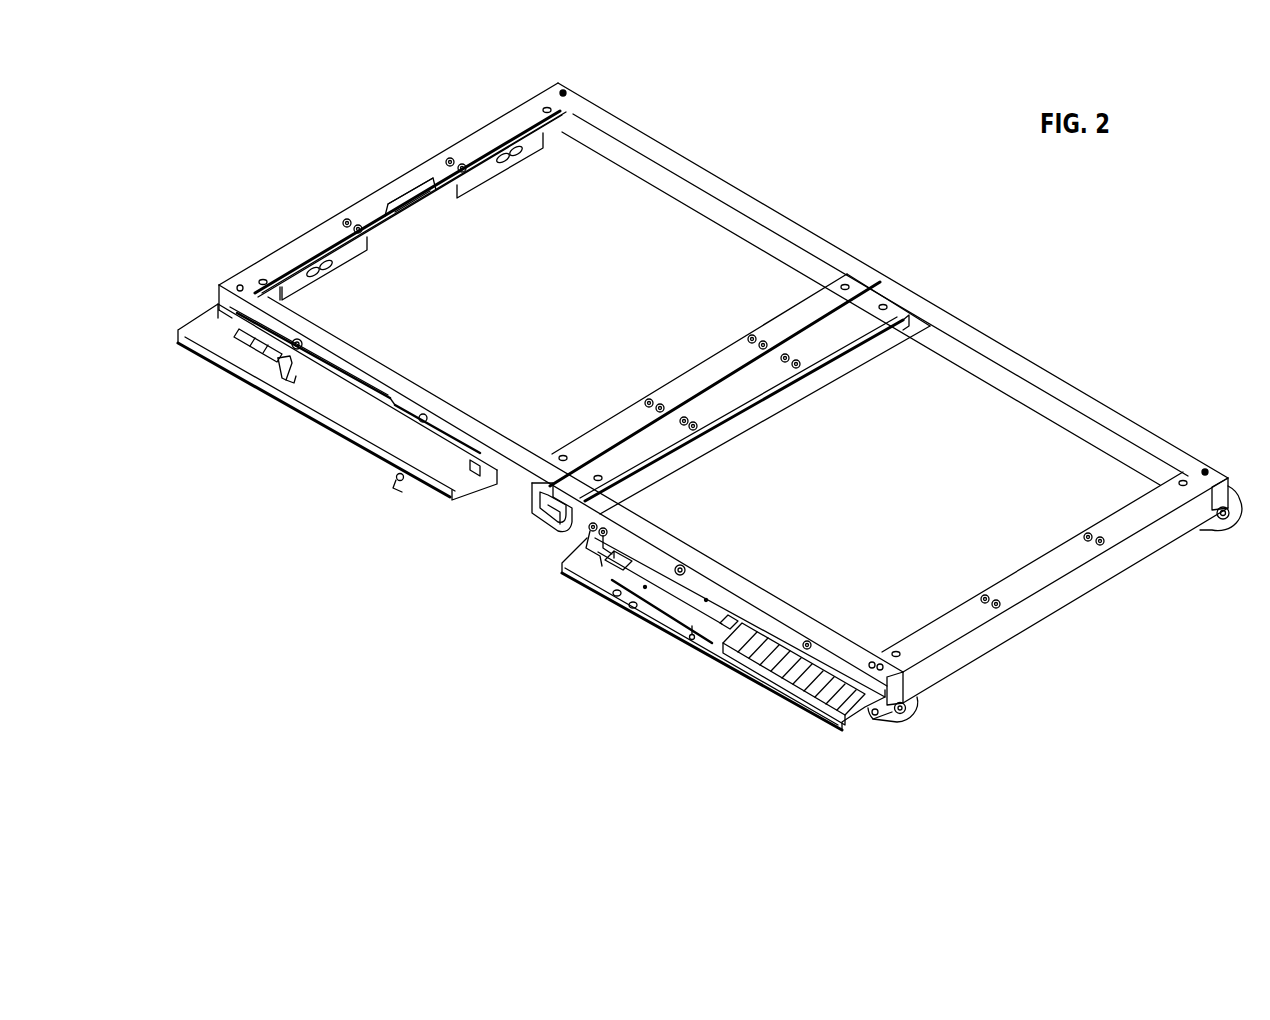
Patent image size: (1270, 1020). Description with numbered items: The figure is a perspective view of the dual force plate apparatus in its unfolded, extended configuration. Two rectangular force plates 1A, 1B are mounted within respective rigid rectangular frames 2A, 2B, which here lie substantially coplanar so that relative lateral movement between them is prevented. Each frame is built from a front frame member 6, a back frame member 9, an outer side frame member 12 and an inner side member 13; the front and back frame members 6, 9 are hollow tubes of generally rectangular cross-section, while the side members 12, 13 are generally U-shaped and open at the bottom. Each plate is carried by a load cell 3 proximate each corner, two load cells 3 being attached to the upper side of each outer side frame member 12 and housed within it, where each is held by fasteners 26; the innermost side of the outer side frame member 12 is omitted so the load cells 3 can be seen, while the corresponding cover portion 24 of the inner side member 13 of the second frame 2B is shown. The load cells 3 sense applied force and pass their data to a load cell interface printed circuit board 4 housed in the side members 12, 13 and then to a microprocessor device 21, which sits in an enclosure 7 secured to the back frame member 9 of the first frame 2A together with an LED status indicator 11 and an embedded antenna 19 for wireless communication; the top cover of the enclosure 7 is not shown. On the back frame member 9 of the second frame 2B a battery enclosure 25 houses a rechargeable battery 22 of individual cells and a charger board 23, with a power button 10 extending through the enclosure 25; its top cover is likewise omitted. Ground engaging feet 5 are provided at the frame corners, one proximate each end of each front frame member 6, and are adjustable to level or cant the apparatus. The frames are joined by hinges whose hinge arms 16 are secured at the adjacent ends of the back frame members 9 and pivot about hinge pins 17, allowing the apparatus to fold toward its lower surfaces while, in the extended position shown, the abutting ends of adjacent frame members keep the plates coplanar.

The first rectangular force plate 1A is at (692, 250).
The second rectangular force plate 1B is at (995, 410).
The first rigid rectangular frame 2A is at (695, 172).
The second rigid rectangular frame 2B is at (1092, 408).
The load cell 3 is at (528, 147).
The load cell interface printed circuit board 4 is at (410, 210).
The ground engaging foot 5 is at (887, 718).
The front frame member 6 is at (617, 127).
The enclosure 7 is at (355, 437).
The back frame member 9 is at (233, 285).
The power button 10 is at (585, 540).
The LED status indicator 11 is at (398, 478).
The outer side frame member 12 is at (427, 177).
The inner side member 13 is at (857, 290).
The hinge arm 16 is at (540, 505).
The hinge pin 17 is at (562, 527).
The embedded antenna 19 is at (238, 337).
The microprocessor device 21 is at (347, 407).
The rechargeable battery 22 is at (802, 670).
The charger board 23 is at (668, 599).
The cover portion 24 is at (887, 330).
The battery enclosure 25 is at (728, 620).
The fasteners 26 is at (1100, 541).